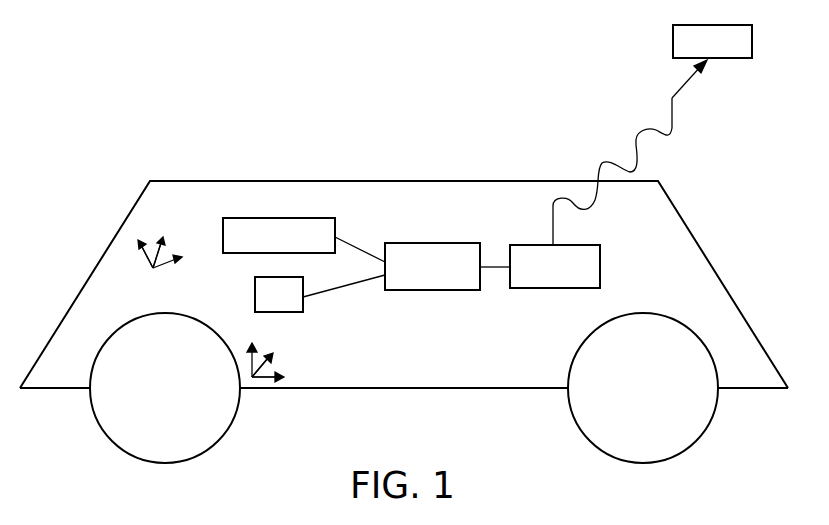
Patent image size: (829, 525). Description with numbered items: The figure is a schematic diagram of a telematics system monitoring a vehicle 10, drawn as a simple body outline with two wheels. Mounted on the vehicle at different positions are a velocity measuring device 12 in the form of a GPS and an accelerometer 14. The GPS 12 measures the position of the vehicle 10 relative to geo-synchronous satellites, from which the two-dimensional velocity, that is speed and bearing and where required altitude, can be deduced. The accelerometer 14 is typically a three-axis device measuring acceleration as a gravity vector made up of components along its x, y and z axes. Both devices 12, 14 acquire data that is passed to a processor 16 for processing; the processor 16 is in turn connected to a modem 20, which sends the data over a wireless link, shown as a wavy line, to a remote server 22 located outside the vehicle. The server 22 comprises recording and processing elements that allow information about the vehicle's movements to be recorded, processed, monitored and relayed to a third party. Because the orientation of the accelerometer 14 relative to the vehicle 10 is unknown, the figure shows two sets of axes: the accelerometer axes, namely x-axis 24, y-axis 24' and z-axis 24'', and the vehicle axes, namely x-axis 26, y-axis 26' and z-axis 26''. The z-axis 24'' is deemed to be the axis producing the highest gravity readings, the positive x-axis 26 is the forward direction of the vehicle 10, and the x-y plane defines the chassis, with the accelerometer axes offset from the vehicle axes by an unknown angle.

The vehicle 10 is at (375, 173).
The velocity measuring device 12 is at (303, 300).
The accelerometer 14 is at (335, 229).
The processor 16 is at (434, 243).
The modem 20 is at (600, 263).
The remote server 22 is at (673, 40).
The x-axis 24 is at (164, 260).
The y-axis 24' is at (187, 241).
The z-axis 24'' is at (124, 269).
The x-axis 26 is at (271, 375).
The y-axis 26' is at (291, 360).
The z-axis 26'' is at (283, 349).